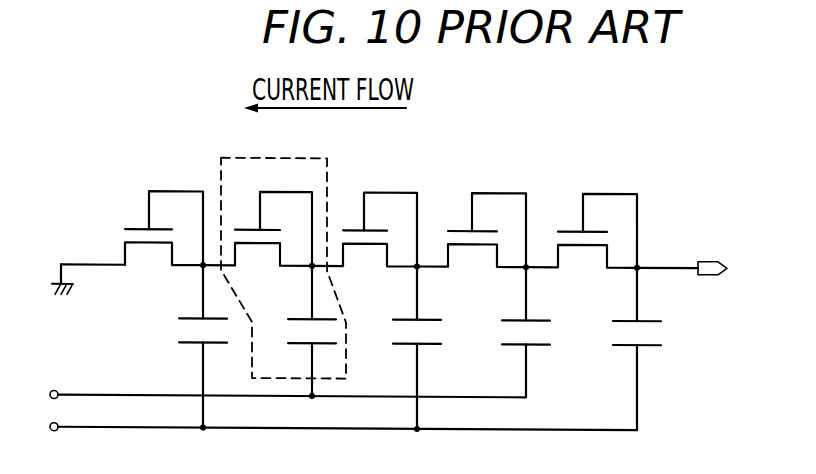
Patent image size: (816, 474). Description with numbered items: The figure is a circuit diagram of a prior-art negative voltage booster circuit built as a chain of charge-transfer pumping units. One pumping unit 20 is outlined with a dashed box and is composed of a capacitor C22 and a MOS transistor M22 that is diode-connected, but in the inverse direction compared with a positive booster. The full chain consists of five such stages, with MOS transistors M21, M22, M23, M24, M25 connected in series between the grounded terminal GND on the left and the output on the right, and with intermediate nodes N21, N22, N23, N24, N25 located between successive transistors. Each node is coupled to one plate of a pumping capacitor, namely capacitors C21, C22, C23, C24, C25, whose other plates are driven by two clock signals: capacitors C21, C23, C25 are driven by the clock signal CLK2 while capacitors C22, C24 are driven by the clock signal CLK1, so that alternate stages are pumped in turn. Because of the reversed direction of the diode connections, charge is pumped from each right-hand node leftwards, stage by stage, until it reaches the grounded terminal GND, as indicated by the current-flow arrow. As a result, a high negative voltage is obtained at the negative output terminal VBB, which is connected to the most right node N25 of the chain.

The pumping unit 20 is at (283, 252).
The MOS transistor M21 is at (163, 212).
The MOS transistor M22 is at (257, 213).
The MOS transistor M23 is at (364, 214).
The MOS transistor M24 is at (471, 215).
The MOS transistor M25 is at (581, 215).
The node N21 is at (176, 280).
The node N22 is at (285, 281).
The node N23 is at (391, 281).
The node N24 is at (499, 282).
The most right node N25 is at (611, 283).
The capacitor C21 is at (186, 348).
The capacitor C22 is at (296, 333).
The capacitor C23 is at (401, 349).
The capacitor C24 is at (510, 332).
The capacitor C25 is at (622, 349).
The grounded terminal GND is at (81, 296).
The clock signal CLK1 is at (284, 377).
The clock signal CLK2 is at (339, 448).
The negative output terminal VBB is at (707, 270).